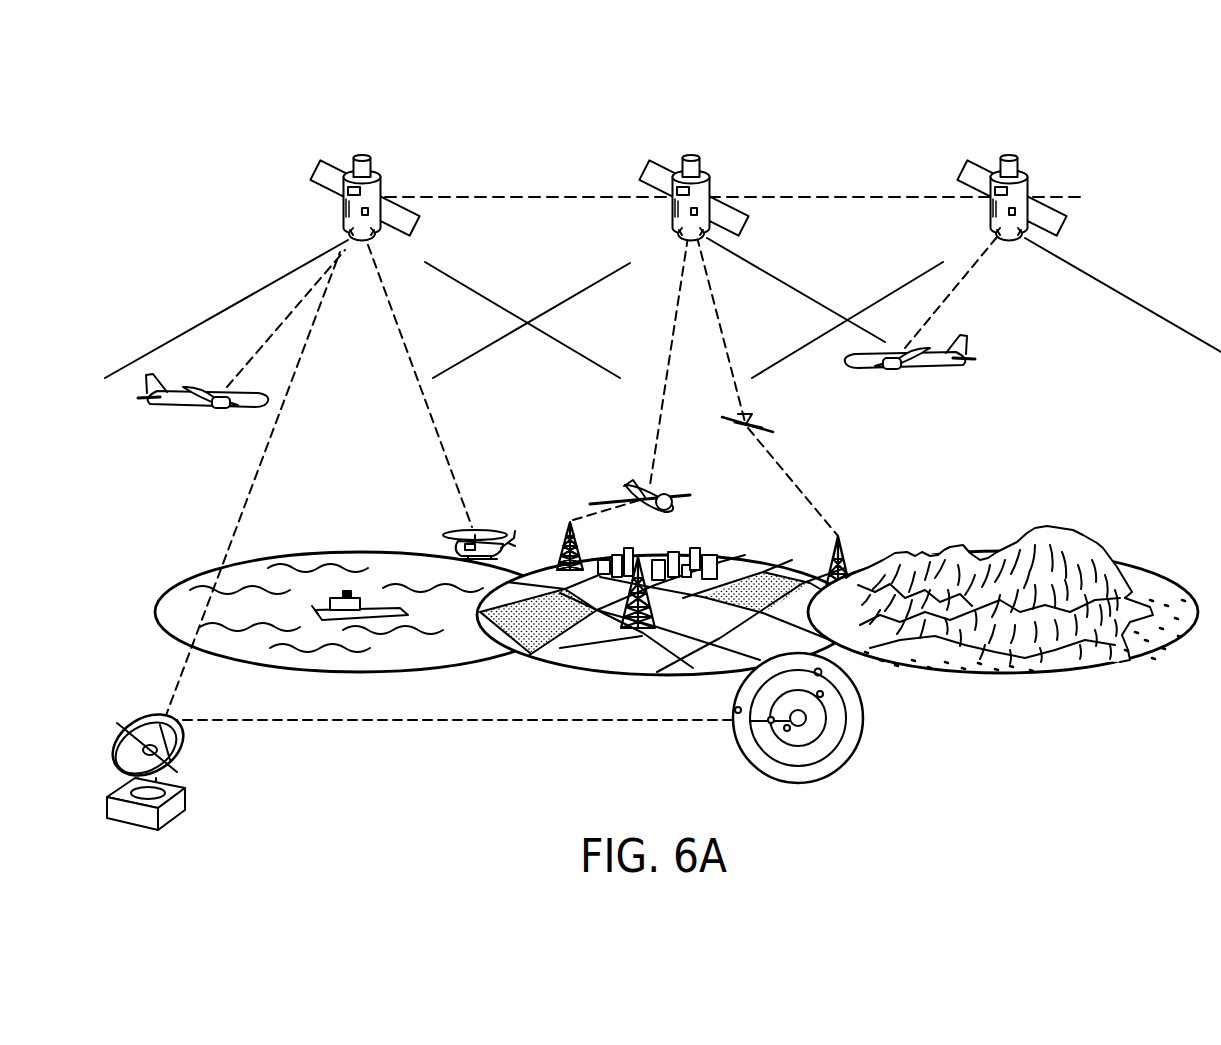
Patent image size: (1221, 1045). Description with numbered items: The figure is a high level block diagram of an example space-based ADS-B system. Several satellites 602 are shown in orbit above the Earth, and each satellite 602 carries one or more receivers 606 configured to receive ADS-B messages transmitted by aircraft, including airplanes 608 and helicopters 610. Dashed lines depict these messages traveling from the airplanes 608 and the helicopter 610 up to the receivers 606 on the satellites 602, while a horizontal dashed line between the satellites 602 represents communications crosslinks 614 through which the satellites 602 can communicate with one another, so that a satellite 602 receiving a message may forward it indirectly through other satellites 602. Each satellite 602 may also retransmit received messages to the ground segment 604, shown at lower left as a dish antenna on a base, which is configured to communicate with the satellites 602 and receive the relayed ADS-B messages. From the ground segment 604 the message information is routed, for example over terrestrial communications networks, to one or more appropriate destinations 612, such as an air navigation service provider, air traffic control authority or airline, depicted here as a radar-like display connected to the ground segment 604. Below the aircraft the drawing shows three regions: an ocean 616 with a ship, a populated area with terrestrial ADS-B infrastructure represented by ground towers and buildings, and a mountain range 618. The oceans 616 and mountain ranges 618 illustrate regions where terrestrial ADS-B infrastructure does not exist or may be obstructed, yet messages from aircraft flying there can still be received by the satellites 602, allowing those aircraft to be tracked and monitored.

The satellite 602 is at (363, 157).
The ground segment 604 is at (188, 797).
The receiver 606 is at (375, 234).
The airplane 608 is at (193, 410).
The helicopter 610 is at (485, 526).
The destination 612 is at (863, 727).
The communications crosslink 614 is at (535, 200).
The ocean 616 is at (370, 552).
The mountain range 618 is at (1068, 528).